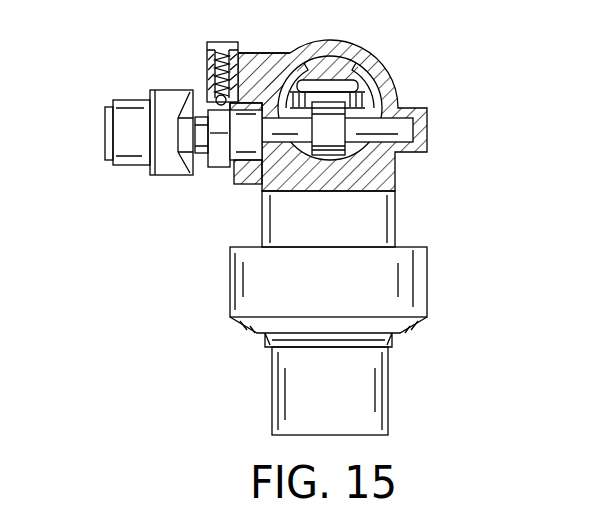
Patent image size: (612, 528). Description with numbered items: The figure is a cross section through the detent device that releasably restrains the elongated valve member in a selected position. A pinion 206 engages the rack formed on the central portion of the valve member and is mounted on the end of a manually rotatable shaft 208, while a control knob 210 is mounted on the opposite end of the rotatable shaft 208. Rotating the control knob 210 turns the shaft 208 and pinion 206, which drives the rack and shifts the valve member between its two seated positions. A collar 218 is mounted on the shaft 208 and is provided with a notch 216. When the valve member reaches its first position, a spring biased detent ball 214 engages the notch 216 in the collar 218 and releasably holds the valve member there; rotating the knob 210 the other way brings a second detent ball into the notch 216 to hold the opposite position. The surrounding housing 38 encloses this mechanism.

The valve cap / housing 38 is at (397, 65).
The pinion 206 is at (328, 150).
The manually rotatable shaft 208 is at (397, 128).
The control knob 210 is at (128, 134).
The spring biased detent ball 214 is at (258, 55).
The notch 216 is at (209, 94).
The collar 218 is at (222, 154).